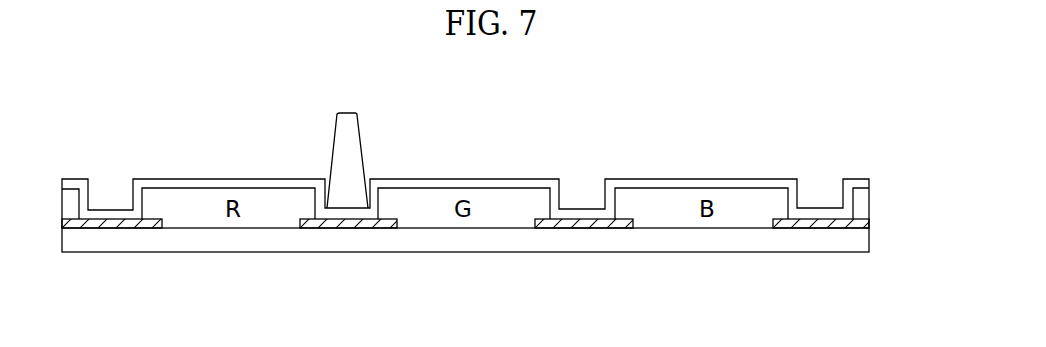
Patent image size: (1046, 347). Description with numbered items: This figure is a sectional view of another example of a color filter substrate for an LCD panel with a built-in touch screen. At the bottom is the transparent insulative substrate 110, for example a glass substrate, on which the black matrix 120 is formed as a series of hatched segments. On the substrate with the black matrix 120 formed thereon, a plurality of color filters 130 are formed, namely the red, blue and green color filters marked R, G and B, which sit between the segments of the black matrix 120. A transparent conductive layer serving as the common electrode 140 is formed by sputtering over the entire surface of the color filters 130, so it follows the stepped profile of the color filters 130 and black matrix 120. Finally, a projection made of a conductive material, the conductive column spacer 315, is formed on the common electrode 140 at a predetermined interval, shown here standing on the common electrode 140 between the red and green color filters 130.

The transparent insulative substrate 110 is at (827, 243).
The black matrix 120 is at (868, 222).
The color filters 130 is at (762, 195).
The common electrode 140 is at (682, 183).
The conductive column spacer 315 is at (355, 136).